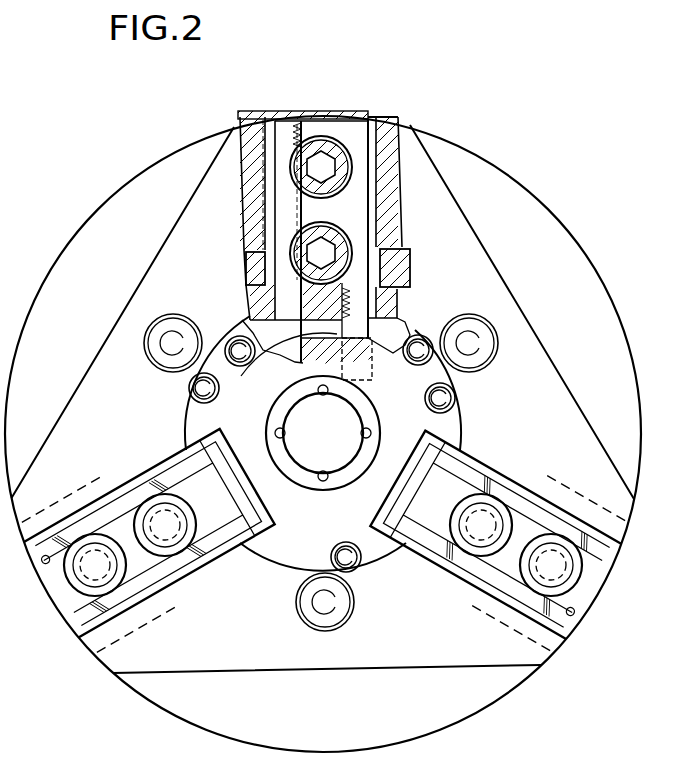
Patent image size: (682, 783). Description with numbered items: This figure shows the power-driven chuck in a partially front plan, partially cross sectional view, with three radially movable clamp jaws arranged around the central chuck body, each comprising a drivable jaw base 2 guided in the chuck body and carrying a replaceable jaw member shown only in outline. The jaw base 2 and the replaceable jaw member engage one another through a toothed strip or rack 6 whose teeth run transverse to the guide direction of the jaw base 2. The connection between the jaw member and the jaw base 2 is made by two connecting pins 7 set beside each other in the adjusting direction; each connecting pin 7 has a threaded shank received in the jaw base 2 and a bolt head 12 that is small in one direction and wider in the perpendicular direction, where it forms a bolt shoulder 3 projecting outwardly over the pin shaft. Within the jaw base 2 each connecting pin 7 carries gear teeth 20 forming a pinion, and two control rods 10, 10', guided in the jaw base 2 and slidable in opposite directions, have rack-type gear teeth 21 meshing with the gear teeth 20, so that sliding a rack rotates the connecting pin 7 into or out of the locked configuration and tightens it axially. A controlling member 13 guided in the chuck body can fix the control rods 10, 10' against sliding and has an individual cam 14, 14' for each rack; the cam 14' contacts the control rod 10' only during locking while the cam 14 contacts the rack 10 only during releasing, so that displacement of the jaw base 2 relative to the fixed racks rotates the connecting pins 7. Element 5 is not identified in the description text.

The jaw base 2 is at (308, 118).
The bolt shoulder 3 is at (547, 562).
The key 5 is at (252, 268).
The toothed strip or rack 6 is at (548, 604).
The connecting pin 7 is at (321, 165).
The control rod 10 is at (409, 217).
The control rod 10' is at (288, 212).
The bolt head 12 is at (580, 568).
The controlling member 13 is at (290, 365).
The cam 14 is at (321, 472).
The cam 14' is at (379, 368).
The gear teeth 20 is at (362, 116).
The gear teeth 21 is at (318, 208).